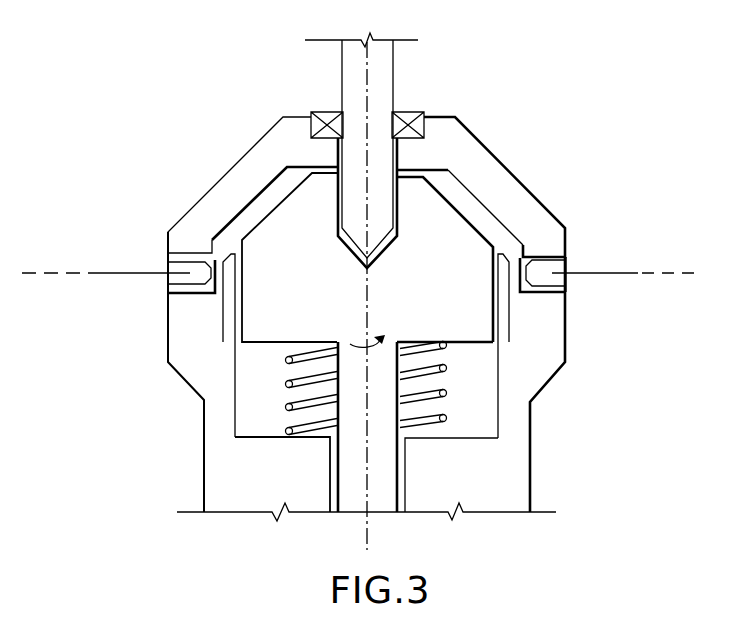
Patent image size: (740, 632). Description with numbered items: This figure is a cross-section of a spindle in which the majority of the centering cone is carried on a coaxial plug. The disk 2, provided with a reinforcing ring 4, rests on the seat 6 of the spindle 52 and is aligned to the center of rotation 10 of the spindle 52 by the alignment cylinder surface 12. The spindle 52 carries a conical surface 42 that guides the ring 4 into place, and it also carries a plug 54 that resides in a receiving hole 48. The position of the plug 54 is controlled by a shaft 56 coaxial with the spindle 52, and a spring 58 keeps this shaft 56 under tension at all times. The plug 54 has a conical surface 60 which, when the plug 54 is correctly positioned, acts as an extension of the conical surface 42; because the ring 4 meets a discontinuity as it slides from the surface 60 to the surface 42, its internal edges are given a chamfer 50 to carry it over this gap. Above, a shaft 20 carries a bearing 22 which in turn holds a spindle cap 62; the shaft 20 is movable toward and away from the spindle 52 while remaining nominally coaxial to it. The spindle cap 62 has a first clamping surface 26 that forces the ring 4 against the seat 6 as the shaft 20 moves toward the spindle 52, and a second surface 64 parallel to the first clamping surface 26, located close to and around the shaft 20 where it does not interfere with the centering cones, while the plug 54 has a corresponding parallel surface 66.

The disk 2 is at (623, 269).
The reinforcing ring 4 is at (572, 266).
The seat 6 is at (545, 296).
The center of rotation 10 is at (376, 282).
The alignment cylinder surface 12 is at (223, 291).
The shaft 20 is at (334, 72).
The bearing 22 is at (407, 107).
The first clamping surface 26 is at (195, 248).
The conical surface 42 is at (509, 270).
The receiving hole 48 is at (227, 438).
The chamfer 50 is at (201, 283).
The spindle 52 is at (538, 470).
The plug 54 is at (463, 350).
The shaft 56 is at (378, 520).
The spring 58 is at (452, 417).
The conical surface 60 is at (268, 220).
The spindle cap 62 is at (505, 163).
The second surface 64 is at (424, 160).
The parallel surface 66 is at (410, 177).